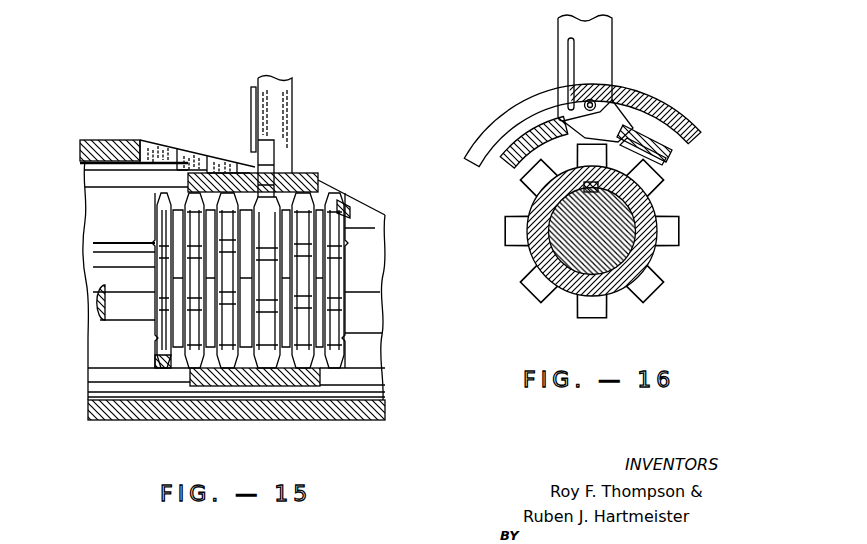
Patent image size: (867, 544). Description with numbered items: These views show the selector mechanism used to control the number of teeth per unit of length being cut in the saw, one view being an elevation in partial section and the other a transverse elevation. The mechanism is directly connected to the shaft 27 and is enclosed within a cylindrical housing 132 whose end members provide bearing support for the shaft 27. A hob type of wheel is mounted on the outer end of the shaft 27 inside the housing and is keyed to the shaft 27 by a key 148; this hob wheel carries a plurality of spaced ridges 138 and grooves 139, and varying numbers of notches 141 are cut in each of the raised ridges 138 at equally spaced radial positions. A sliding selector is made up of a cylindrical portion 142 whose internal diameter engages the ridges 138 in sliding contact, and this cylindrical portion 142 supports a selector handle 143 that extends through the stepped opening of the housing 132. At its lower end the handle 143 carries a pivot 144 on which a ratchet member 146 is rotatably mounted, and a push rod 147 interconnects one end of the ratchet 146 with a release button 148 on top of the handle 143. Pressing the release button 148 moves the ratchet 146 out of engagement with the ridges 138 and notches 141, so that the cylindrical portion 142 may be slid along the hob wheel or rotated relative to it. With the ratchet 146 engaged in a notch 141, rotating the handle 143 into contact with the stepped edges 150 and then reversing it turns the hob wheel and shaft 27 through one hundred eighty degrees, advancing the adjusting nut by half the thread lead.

In FIG. 15, the shaft 27 is at (95, 254).
In FIG. 16, the shaft 27 is at (622, 250).
In FIG. 15, the cylindrical housing 132 is at (112, 142).
In FIG. 16, the ridges 138 is at (645, 133).
In FIG. 15, the grooves 139 is at (205, 297).
In FIG. 15, the notches 141 is at (325, 208).
In FIG. 16, the notches 141 is at (660, 172).
In FIG. 15, the cylindrical portion 142 is at (307, 386).
In FIG. 16, the cylindrical portion 142 is at (693, 128).
In FIG. 15, the selector handle 143 is at (285, 100).
In FIG. 16, the selector handle 143 is at (600, 33).
In FIG. 16, the pivot 144 is at (594, 101).
In FIG. 15, the ratchet member 146 is at (268, 157).
In FIG. 16, the ratchet member 146 is at (617, 113).
In FIG. 15, the push rod 147 is at (252, 88).
In FIG. 16, the push rod 147 is at (569, 52).
In FIG. 16, the release button 148 is at (578, 184).
In FIG. 15, the stepped edges 150 is at (193, 158).